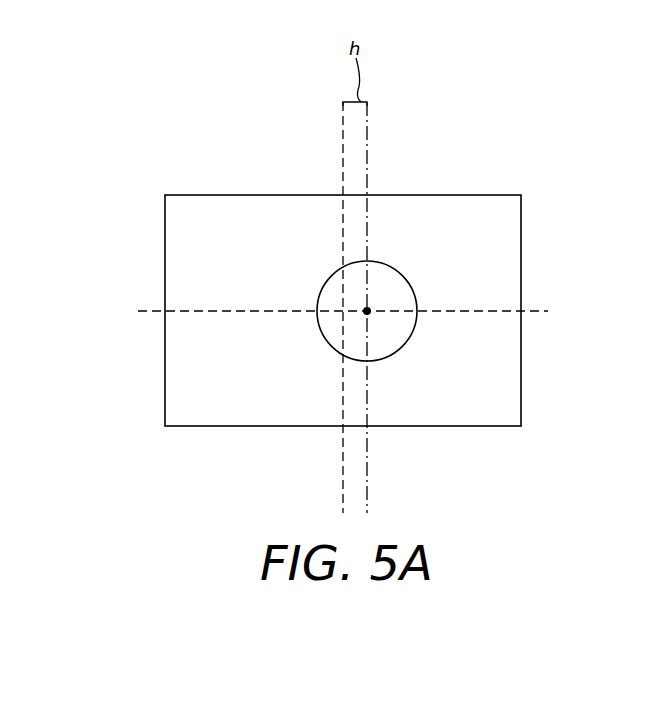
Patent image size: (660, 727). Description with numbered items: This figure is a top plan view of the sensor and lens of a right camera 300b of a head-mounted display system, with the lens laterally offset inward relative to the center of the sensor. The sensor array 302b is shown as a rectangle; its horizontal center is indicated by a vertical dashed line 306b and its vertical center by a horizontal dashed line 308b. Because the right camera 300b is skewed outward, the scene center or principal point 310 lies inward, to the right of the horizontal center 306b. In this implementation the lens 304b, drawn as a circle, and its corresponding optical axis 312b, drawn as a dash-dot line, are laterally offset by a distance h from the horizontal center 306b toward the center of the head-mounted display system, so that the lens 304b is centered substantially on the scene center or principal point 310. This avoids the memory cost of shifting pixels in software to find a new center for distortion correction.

The right camera 300b is at (168, 124).
The sensor array 302b is at (505, 195).
The lens 304b is at (330, 278).
The horizontal center 306b is at (343, 130).
The vertical center 308b is at (530, 311).
The scene center or principal point 310 is at (368, 316).
The optical axis 312b is at (368, 147).